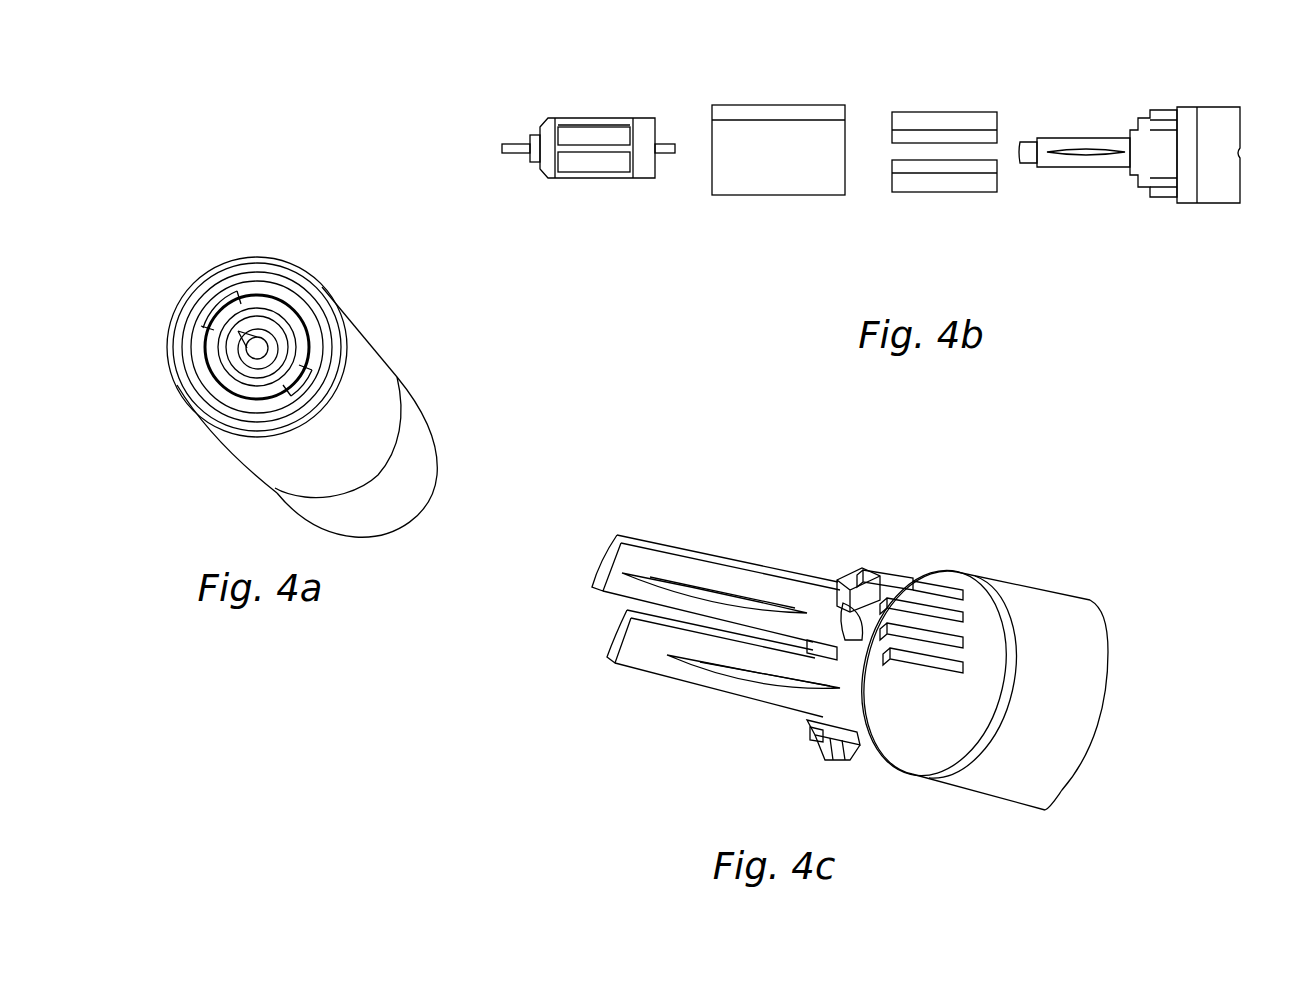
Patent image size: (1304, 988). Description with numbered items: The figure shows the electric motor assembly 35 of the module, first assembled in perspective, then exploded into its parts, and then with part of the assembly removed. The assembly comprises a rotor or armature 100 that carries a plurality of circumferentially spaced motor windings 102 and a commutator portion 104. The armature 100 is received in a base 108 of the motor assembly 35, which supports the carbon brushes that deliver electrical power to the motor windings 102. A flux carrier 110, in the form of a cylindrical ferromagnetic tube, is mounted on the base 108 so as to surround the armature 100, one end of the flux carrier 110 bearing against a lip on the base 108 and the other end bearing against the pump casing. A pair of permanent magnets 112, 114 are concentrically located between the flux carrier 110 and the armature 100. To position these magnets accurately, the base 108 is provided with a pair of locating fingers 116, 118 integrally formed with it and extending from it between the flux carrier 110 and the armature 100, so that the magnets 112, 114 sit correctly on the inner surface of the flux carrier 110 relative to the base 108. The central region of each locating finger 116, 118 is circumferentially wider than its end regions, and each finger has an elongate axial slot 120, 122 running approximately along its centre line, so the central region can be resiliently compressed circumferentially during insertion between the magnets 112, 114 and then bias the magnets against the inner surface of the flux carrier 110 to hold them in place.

In FIG. 4A, the electric motor assembly 35 is at (184, 427).
In FIG. 4A, the armature 100 is at (257, 315).
In FIG. 4B, the armature 100 is at (593, 173).
In FIG. 4B, the motor windings 102 is at (588, 140).
In FIG. 4B, the commutator portion 104 is at (652, 125).
In FIG. 4A, the base 108 is at (437, 453).
In FIG. 4B, the base 108 is at (1210, 187).
In FIG. 4C, the base 108 is at (1013, 780).
In FIG. 4A, the flux carrier 110 is at (357, 350).
In FIG. 4B, the flux carrier 110 is at (773, 173).
In FIG. 4A, the permanent magnet 112 is at (203, 372).
In FIG. 4B, the permanent magnet 112 is at (945, 180).
In FIG. 4A, the permanent magnet 114 is at (285, 298).
In FIG. 4B, the permanent magnet 114 is at (942, 123).
In FIG. 4A, the locating finger 116 is at (298, 397).
In FIG. 4B, the locating finger 116 is at (1042, 158).
In FIG. 4C, the locating finger 116 is at (647, 658).
In FIG. 4A, the locating finger 118 is at (222, 315).
In FIG. 4C, the locating finger 118 is at (625, 585).
In FIG. 4B, the elongate axial slot 120 is at (1087, 152).
In FIG. 4C, the elongate axial slot 120 is at (823, 697).
In FIG. 4C, the elongate axial slot 122 is at (730, 562).